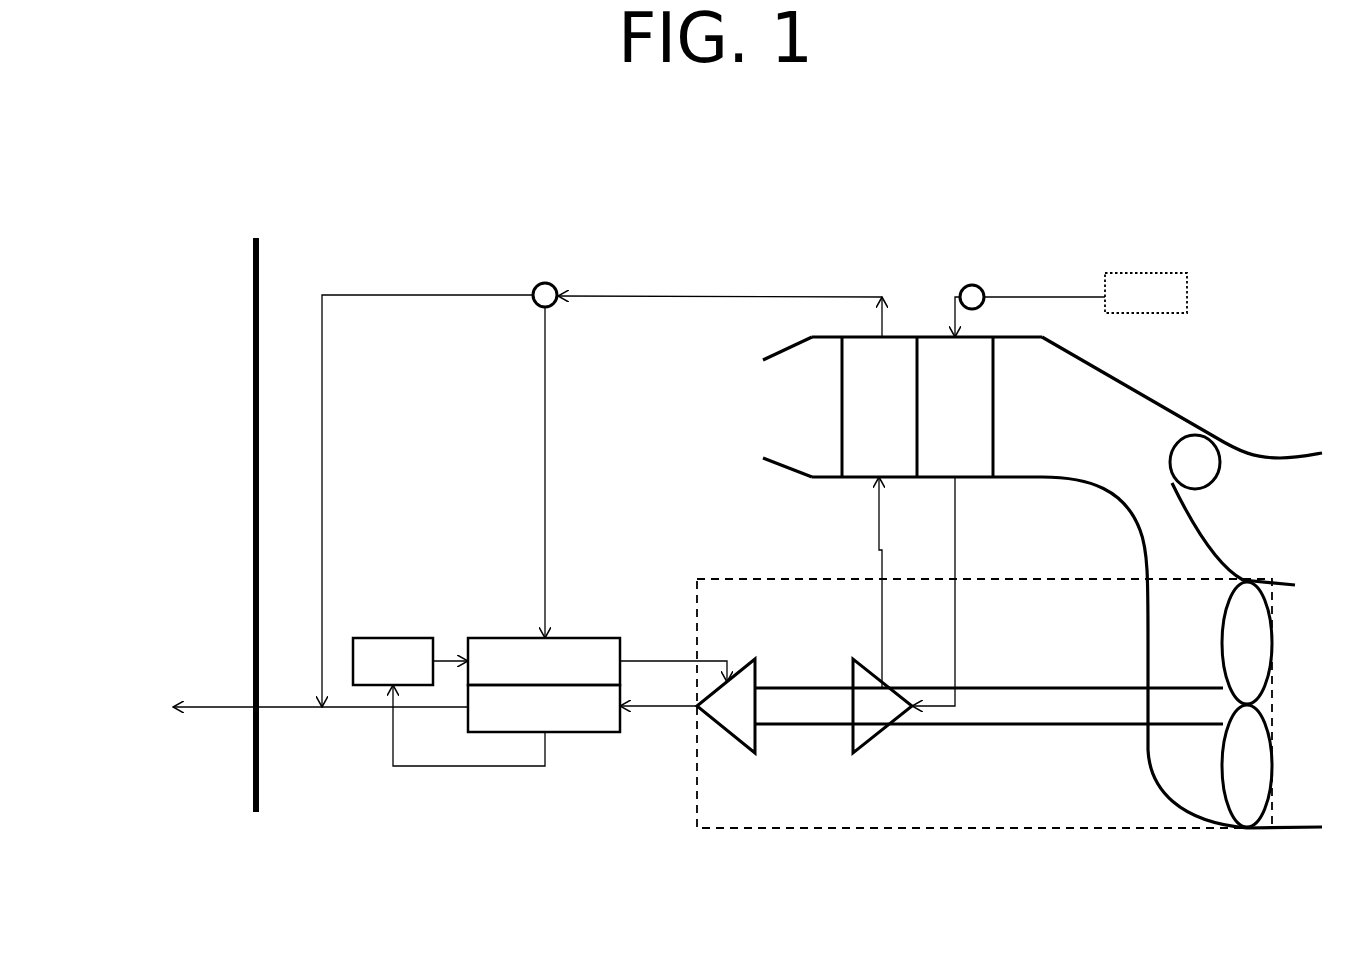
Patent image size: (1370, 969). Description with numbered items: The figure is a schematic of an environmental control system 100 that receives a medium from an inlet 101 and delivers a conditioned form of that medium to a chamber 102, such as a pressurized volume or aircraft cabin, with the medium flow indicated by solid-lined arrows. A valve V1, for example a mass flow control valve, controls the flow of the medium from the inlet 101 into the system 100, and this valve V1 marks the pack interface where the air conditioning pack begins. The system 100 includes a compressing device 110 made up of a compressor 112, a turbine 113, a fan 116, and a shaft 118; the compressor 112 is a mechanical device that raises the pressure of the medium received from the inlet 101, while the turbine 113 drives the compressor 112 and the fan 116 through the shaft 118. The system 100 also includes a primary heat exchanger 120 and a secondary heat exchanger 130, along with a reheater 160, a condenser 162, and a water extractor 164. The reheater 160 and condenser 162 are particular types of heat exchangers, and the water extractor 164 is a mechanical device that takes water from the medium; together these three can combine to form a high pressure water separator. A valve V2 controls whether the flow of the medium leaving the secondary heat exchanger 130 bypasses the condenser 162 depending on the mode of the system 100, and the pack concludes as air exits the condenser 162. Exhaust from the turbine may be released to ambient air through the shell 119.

The system 100 is at (1186, 110).
The inlet 101 is at (1146, 293).
The chamber 102 is at (253, 238).
The compressing device 110 is at (793, 832).
The compressor 112 is at (858, 718).
The turbine 113 is at (755, 718).
The fan 116 is at (1203, 762).
The shaft 118 is at (1090, 727).
The shell 119 is at (1193, 430).
The primary heat exchanger 120 is at (935, 420).
The secondary heat exchanger 130 is at (860, 420).
The reheater 160 is at (524, 673).
The condenser 162 is at (524, 720).
The water extractor 164 is at (373, 673).
The valve V1 is at (962, 288).
The valve V2 is at (535, 290).